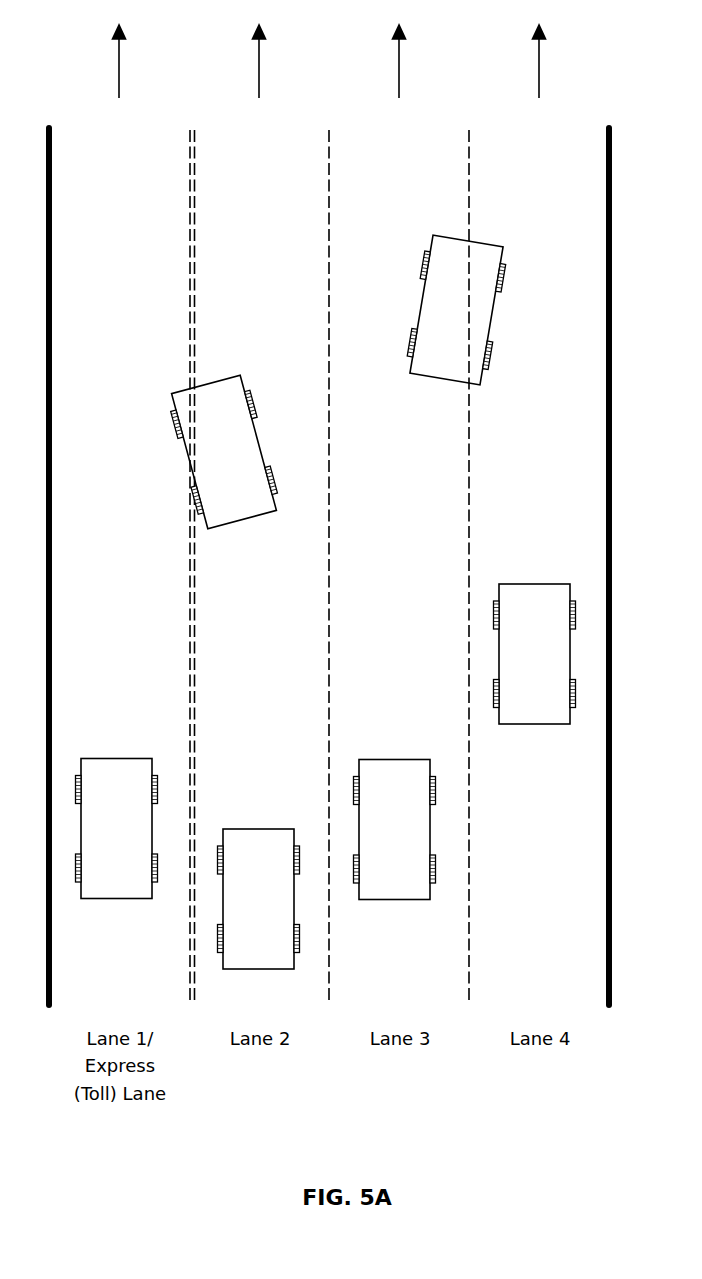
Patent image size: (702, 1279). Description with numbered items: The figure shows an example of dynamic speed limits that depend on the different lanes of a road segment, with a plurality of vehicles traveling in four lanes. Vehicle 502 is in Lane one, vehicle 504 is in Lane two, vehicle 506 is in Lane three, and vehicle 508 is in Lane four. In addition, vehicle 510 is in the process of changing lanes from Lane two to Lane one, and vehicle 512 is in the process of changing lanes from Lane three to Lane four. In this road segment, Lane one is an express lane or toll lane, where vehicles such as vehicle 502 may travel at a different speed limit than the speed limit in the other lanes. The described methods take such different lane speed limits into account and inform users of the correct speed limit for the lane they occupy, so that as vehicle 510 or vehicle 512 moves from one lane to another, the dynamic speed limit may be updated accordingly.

The vehicle 502 is at (102, 759).
The vehicle 504 is at (242, 829).
The vehicle 506 is at (383, 760).
The vehicle 508 is at (521, 584).
The vehicle 510 is at (223, 379).
The vehicle 512 is at (487, 242).